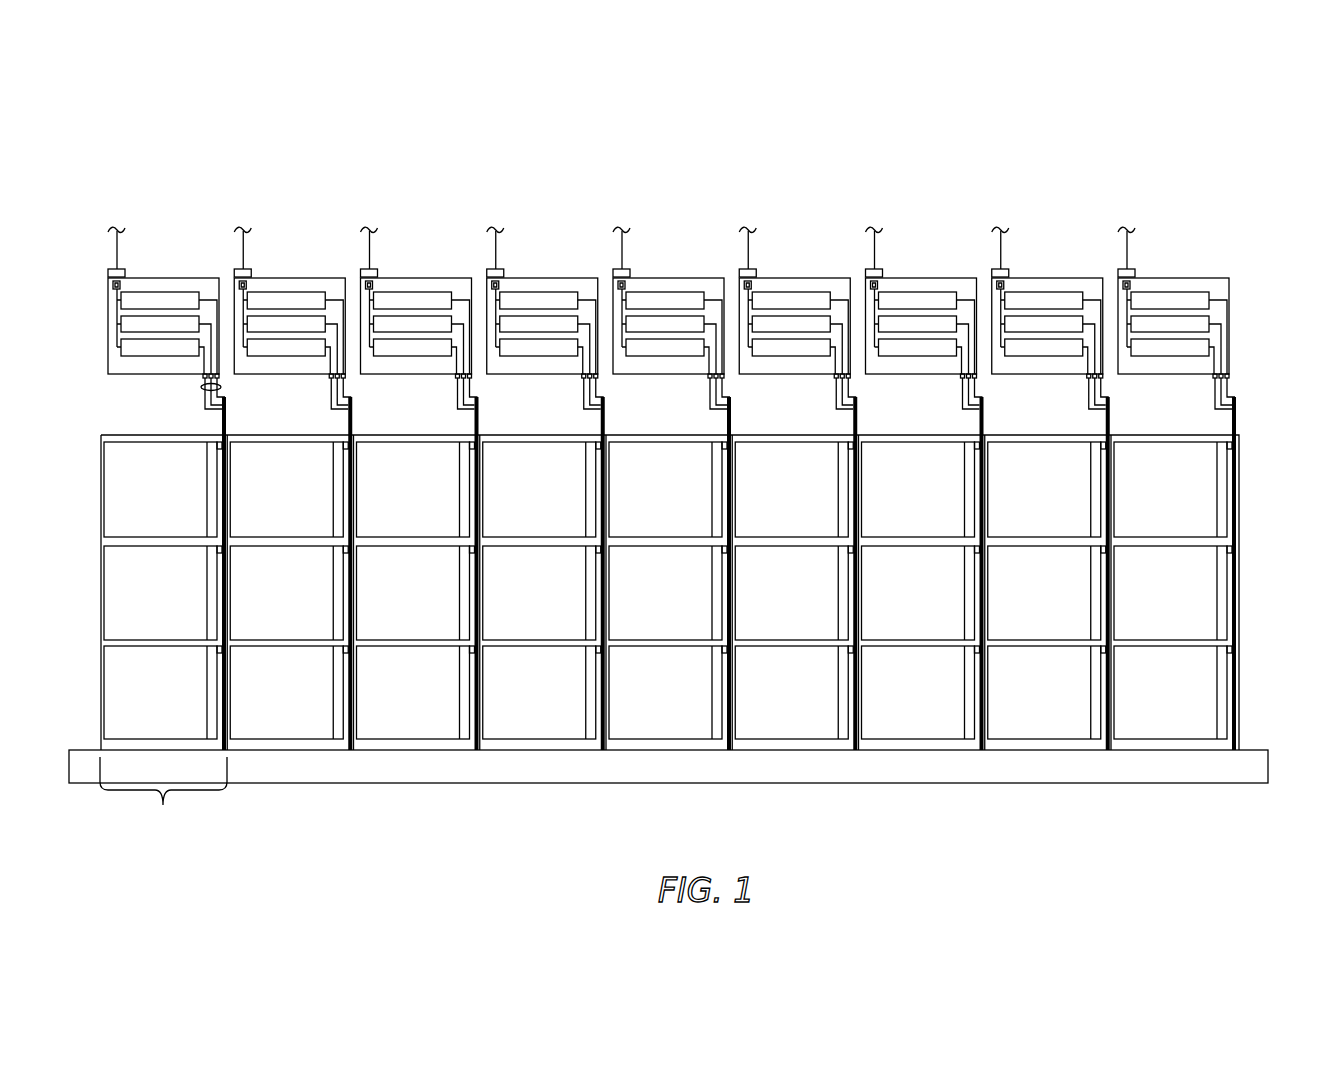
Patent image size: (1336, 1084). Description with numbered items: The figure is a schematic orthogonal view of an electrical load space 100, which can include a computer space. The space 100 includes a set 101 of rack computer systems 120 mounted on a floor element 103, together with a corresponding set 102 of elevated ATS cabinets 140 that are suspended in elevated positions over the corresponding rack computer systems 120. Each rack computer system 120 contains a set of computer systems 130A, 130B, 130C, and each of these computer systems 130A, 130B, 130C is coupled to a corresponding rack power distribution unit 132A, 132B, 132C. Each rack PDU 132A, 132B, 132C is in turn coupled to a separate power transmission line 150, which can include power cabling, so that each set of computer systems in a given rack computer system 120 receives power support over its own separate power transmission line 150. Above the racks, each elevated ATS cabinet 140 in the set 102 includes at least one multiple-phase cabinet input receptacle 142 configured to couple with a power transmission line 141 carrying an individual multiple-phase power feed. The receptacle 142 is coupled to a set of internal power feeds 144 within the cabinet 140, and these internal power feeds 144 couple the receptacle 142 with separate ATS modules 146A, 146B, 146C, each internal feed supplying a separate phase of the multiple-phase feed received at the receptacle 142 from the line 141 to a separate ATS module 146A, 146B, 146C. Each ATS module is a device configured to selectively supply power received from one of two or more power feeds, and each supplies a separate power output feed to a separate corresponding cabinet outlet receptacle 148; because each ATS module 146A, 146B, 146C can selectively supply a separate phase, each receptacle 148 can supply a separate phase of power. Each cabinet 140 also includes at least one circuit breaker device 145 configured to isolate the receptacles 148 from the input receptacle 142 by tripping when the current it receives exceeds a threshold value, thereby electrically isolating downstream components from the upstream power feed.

The electrical load space 100 is at (1277, 163).
The set of rack computer systems 101 is at (1270, 570).
The set of elevated ATS cabinets 102 is at (1269, 328).
The floor element 103 is at (668, 766).
The rack computer system 120 is at (163, 793).
The computer system 130A is at (160, 489).
The computer system 130B is at (160, 593).
The computer system 130C is at (160, 692).
The rack power distribution unit 132A is at (198, 529).
The rack power distribution unit 132B is at (198, 629).
The rack power distribution unit 132C is at (198, 728).
The elevated ATS cabinet 140 is at (170, 278).
The power transmission line 141 is at (118, 247).
The multiple-phase cabinet input receptacle 142 is at (120, 272).
The internal power feeds 144 is at (115, 320).
The circuit breaker device 145 is at (112, 287).
The ATS module 146A is at (172, 301).
The ATS module 146B is at (127, 325).
The ATS module 146C is at (134, 350).
The cabinet outlet receptacle 148 is at (189, 379).
The power transmission line 150 is at (205, 389).